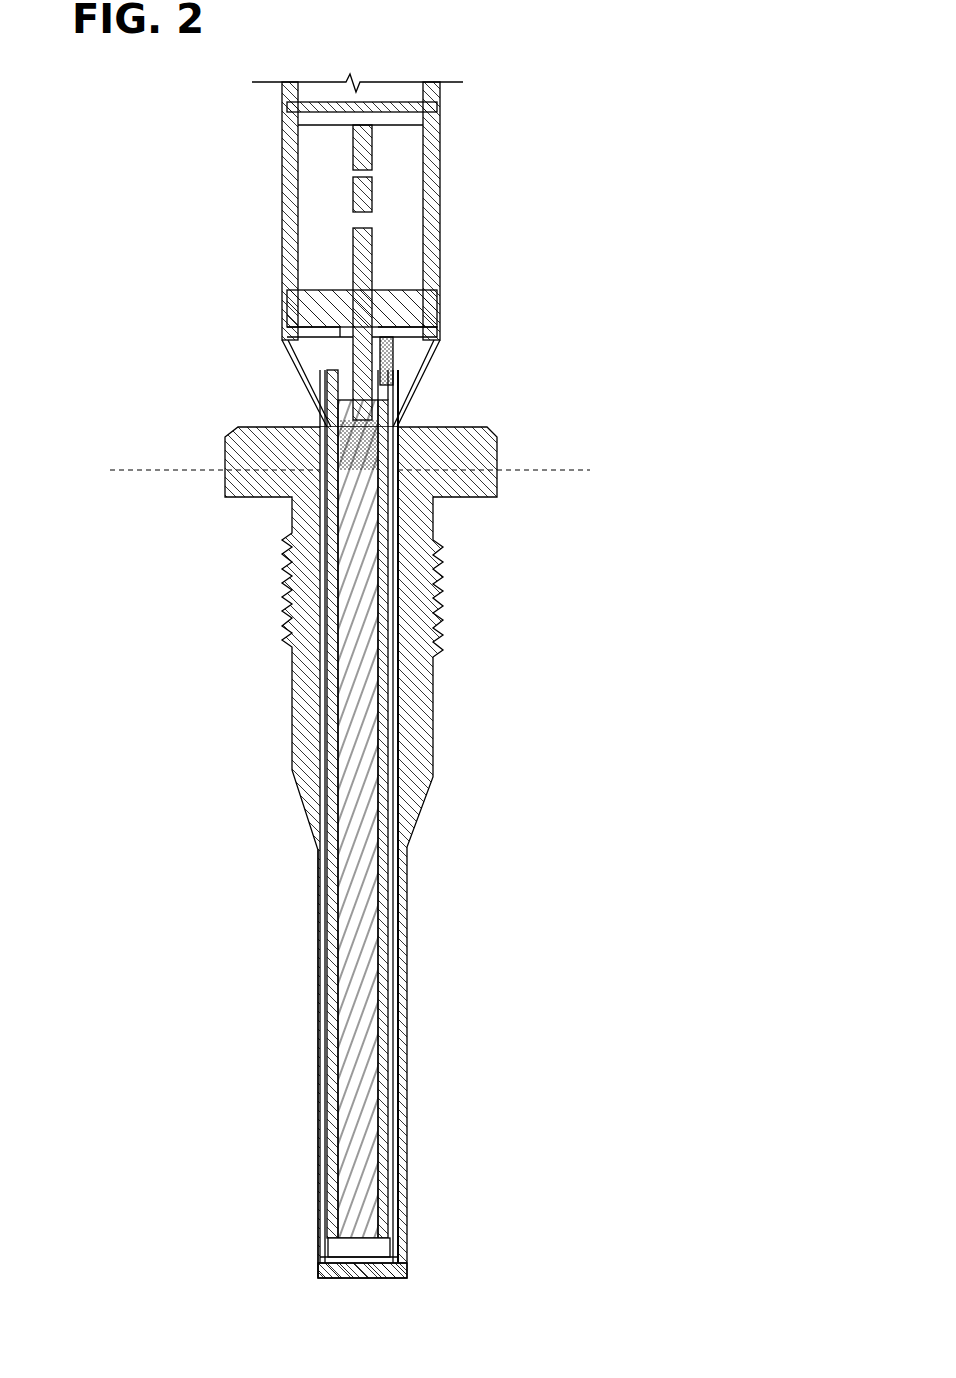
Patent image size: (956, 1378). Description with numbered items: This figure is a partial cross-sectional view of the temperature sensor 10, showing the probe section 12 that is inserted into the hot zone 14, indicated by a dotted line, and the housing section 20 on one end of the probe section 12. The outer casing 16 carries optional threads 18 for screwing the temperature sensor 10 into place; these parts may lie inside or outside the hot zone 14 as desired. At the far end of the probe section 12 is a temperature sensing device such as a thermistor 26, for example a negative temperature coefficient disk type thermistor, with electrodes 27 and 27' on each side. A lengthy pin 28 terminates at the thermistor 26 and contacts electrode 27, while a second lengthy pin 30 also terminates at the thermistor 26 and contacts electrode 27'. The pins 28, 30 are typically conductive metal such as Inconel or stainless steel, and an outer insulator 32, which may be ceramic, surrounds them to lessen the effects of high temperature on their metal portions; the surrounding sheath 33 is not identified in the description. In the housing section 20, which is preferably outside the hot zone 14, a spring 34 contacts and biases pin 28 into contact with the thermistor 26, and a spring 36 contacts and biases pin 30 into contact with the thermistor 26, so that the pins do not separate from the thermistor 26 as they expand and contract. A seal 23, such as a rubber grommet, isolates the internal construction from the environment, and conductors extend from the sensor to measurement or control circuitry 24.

The temperature sensor 10 is at (152, 241).
The probe section 12 is at (452, 675).
The hot zone 14 is at (120, 563).
The outer casing 16 is at (268, 630).
The threads 18 is at (280, 575).
The housing section 20 is at (505, 147).
The seal 23 is at (432, 106).
The circuitry 24 is at (380, 213).
The thermistor 26 is at (383, 1250).
The electrode 27 is at (424, 1224).
The electrode 27' is at (404, 1295).
The lengthy pin 28 is at (338, 1030).
The lengthy pin 30 is at (360, 1007).
The outer insulator 32 is at (380, 883).
The sheath 33 is at (325, 1170).
The spring 34 is at (410, 356).
The spring 36 is at (336, 427).